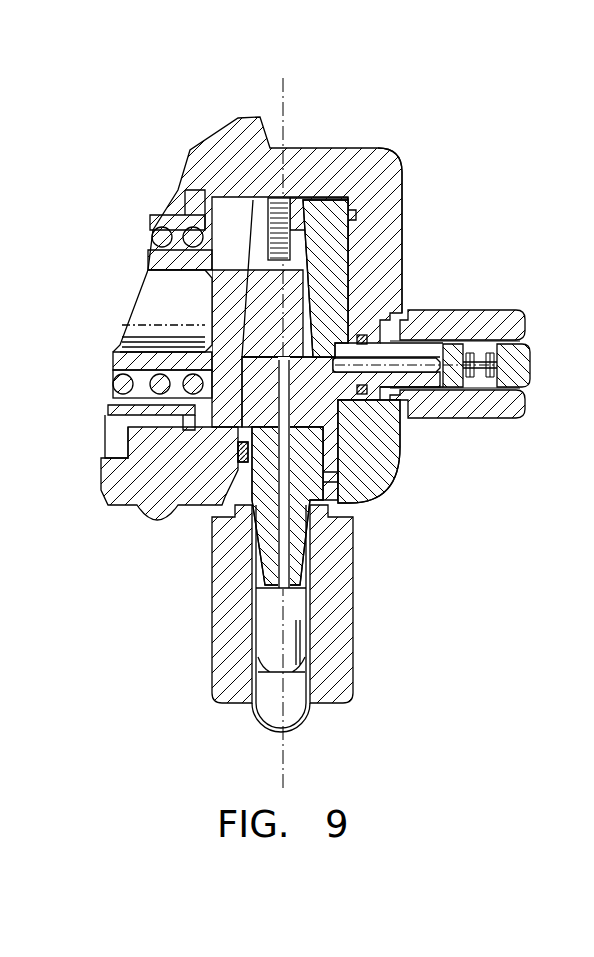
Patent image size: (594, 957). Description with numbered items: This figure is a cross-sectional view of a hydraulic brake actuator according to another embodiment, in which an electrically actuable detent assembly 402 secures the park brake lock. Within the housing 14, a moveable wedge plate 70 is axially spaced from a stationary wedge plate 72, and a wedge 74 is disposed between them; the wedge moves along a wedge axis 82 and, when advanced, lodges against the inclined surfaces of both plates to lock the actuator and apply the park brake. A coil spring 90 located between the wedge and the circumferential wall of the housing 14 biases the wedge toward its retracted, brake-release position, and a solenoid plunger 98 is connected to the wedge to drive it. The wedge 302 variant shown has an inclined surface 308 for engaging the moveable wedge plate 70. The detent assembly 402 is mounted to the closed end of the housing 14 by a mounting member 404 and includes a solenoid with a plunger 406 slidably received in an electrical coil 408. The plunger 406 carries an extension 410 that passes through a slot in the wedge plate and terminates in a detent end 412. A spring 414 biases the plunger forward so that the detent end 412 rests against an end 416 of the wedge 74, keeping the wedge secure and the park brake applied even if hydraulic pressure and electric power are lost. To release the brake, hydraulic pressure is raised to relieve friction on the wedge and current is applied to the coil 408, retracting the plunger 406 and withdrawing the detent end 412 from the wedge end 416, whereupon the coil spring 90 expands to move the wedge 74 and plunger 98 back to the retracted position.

The housing 14 is at (250, 118).
The moveable wedge plate 70 is at (235, 200).
The stationary wedge plate 72 is at (335, 198).
The wedge 74 is at (297, 252).
The wedge axis 82 is at (282, 745).
The coil spring 90 is at (303, 198).
The plunger 98 is at (258, 638).
The wedge 302 is at (302, 285).
The inclined surface 308 is at (245, 302).
The electrically actuable detent assembly 402 is at (459, 402).
The mounting member 404 is at (385, 328).
The plunger 406 is at (462, 382).
The electrical coil 408 is at (505, 313).
The extension 410 is at (405, 389).
The detent end 412 is at (398, 360).
The spring 414 is at (510, 387).
The end of wedge 416 is at (250, 370).